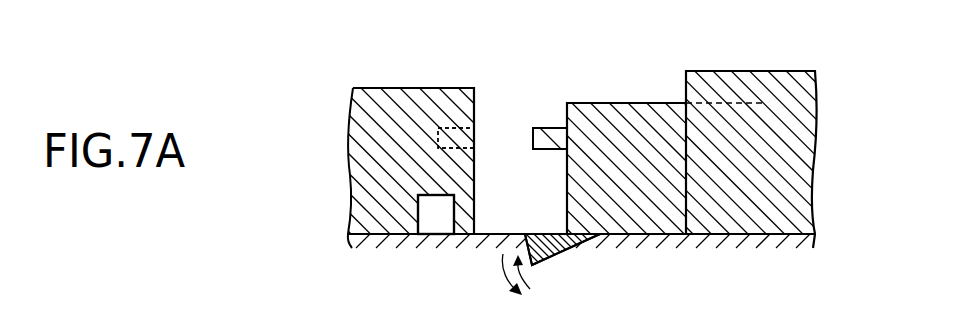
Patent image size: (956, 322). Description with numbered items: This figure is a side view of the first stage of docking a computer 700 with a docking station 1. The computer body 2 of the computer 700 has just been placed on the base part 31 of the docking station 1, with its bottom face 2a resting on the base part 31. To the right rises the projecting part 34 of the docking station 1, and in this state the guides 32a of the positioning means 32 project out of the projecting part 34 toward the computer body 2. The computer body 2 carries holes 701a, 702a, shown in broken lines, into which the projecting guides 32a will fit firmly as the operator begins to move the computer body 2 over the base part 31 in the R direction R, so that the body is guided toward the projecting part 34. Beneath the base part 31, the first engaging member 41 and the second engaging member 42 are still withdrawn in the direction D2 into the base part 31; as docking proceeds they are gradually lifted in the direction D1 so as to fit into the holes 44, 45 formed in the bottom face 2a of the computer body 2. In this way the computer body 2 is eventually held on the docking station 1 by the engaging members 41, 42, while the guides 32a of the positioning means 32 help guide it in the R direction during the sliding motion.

The docking station 1 is at (838, 142).
The computer body 2 is at (353, 88).
The bottom face 2a is at (400, 236).
The base part 31 is at (505, 232).
The positioning means 32 is at (685, 203).
The guide 32a is at (543, 128).
The projecting part 34 is at (762, 71).
The first engaging member 41 is at (548, 258).
The second engaging member 42 is at (562, 249).
The hole 44 is at (420, 212).
The hole 45 is at (436, 214).
The computer 700 is at (308, 115).
The hole 701a is at (447, 128).
The hole 702a is at (456, 138).
The R direction R is at (524, 170).
The direction D1 is at (535, 280).
The direction D2 is at (500, 258).